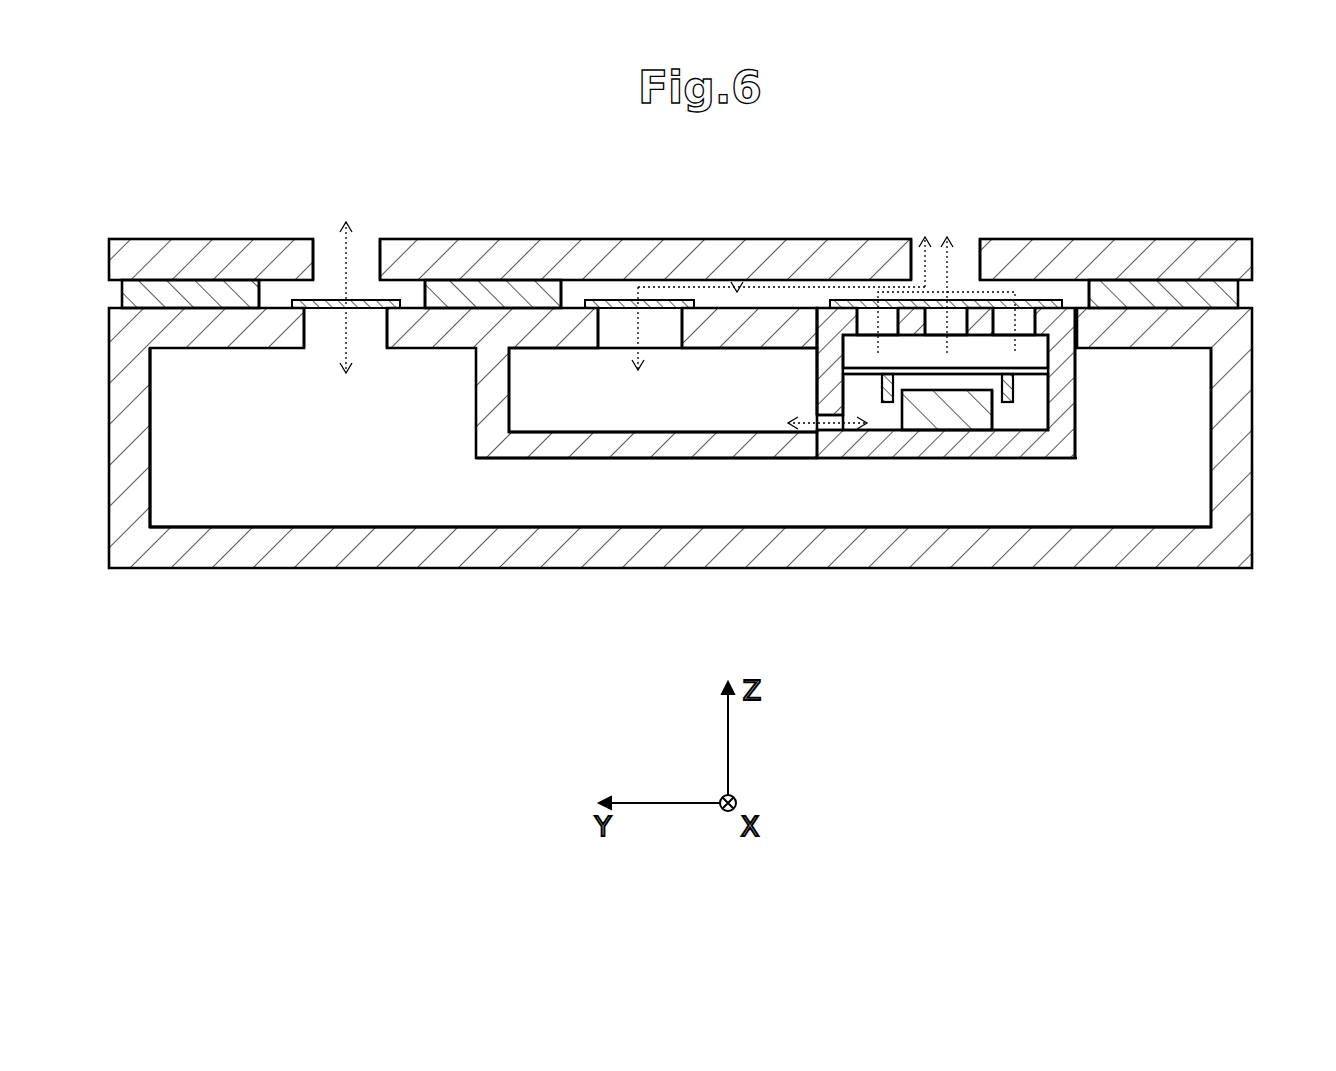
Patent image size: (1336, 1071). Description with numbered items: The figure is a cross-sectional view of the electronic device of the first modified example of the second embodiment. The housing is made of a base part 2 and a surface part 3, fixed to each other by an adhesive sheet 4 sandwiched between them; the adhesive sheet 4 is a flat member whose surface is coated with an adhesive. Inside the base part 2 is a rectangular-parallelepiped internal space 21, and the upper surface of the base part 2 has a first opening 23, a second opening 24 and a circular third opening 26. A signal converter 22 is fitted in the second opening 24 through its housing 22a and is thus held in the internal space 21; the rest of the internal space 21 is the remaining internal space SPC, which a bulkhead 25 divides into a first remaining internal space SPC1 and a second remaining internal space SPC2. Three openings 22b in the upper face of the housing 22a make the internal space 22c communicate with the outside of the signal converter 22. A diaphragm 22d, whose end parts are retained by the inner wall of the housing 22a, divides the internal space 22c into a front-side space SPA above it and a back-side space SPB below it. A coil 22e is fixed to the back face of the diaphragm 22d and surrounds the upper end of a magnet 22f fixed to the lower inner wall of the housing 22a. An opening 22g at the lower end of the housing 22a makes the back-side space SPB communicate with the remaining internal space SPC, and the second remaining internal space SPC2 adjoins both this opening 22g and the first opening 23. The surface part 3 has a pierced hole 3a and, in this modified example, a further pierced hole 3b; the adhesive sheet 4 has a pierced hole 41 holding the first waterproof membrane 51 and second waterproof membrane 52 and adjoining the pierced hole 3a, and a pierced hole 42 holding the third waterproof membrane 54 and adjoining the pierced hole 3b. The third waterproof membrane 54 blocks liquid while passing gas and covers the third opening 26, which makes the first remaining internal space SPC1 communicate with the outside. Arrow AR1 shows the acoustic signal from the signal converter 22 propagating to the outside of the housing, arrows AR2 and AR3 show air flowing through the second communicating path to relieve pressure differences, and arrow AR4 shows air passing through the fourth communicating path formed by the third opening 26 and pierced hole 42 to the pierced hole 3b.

The base part 2 is at (203, 570).
The surface part 3 is at (210, 239).
The pierced hole 3a is at (972, 266).
The pierced hole 3b is at (370, 245).
The adhesive sheet 4 is at (512, 288).
The internal space 21 is at (387, 490).
The signal converter 22 is at (1067, 412).
The housing 22a is at (1075, 428).
The openings 22b is at (870, 318).
The internal space 22c is at (1033, 378).
The diaphragm 22d is at (910, 415).
The coil 22e is at (877, 400).
The magnet 22f is at (992, 413).
The opening 22g is at (843, 427).
The first opening 23 is at (615, 333).
The second opening 24 is at (822, 300).
The bulkhead 25 is at (582, 460).
The third opening 26 is at (328, 333).
The pierced hole 41 is at (1078, 296).
The pierced hole 42 is at (413, 293).
The first waterproof membrane 51 is at (1050, 292).
The second waterproof membrane 52 is at (587, 298).
The third waterproof membrane 54 is at (296, 300).
The front-side space SPA is at (1033, 353).
The back-side space SPB is at (1035, 405).
The remaining internal space SPC is at (298, 470).
The first remaining internal space SPC1 is at (522, 498).
The second remaining internal space SPC2 is at (665, 405).
The arrow AR1 is at (925, 287).
The arrow AR2 is at (737, 292).
The arrow AR3 is at (810, 432).
The arrow AR4 is at (358, 250).